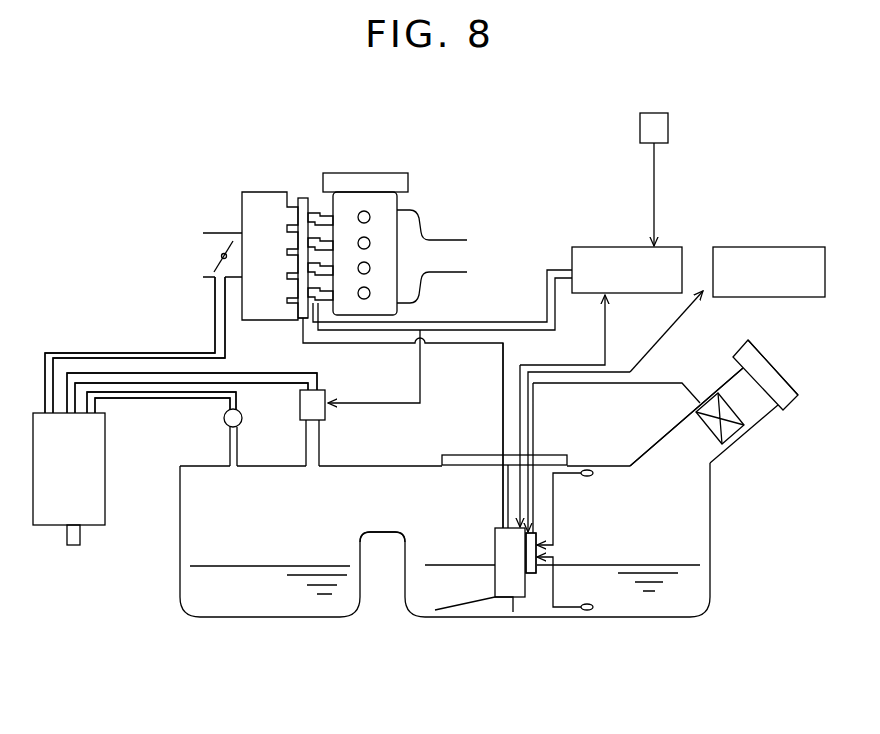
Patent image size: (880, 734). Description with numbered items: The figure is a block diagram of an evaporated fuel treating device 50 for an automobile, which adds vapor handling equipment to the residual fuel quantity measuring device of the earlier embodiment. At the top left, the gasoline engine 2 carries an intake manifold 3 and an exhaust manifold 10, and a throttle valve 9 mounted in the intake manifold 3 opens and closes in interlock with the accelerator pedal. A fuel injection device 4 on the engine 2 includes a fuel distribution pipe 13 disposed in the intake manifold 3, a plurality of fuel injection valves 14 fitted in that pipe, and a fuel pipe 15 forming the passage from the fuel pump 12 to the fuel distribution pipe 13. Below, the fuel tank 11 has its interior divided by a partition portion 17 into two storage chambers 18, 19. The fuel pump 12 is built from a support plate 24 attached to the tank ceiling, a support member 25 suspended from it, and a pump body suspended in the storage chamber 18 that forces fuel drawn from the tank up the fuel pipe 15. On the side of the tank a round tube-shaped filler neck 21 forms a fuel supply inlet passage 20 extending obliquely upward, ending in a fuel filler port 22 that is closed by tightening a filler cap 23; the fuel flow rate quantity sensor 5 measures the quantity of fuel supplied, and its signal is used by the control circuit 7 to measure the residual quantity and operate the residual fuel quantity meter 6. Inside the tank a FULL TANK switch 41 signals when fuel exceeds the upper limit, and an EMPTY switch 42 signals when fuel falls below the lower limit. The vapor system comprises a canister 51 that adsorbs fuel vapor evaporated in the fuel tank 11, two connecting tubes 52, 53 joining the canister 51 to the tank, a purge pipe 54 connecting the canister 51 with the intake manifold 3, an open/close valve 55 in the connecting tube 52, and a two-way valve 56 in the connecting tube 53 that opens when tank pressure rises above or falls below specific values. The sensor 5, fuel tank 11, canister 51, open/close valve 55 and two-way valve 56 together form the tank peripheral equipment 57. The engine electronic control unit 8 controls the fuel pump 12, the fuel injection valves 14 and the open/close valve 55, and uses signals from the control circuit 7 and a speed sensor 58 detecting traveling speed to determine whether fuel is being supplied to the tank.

The evaporated fuel treating device 50 is at (178, 158).
The gasoline engine 2 is at (376, 184).
The intake manifold 3 is at (254, 191).
The fuel injection device 4 is at (301, 188).
The fuel flow rate quantity sensor 5 is at (742, 430).
The residual fuel quantity meter 6 is at (810, 248).
The control circuit 7 is at (531, 573).
The engine electronic control unit 8 is at (581, 248).
The throttle valve 9 is at (224, 246).
The exhaust manifold 10 is at (458, 240).
The fuel tank 11 is at (180, 470).
The fuel pump 12 is at (508, 580).
The fuel distribution pipe 13 is at (300, 319).
The fuel injection valves 14 is at (316, 213).
The fuel pipe 15 is at (372, 345).
The partition portion 17 is at (379, 535).
The storage chamber 18 is at (464, 517).
The storage chamber 19 is at (270, 517).
The fuel supply inlet passage 20 is at (700, 447).
The filler neck 21 is at (722, 382).
The fuel filler port 22 is at (745, 380).
The filler cap 23 is at (784, 393).
The support plate 24 is at (455, 455).
The support member 25 is at (506, 487).
The FULL TANK switch 41 is at (587, 470).
The EMPTY switch 42 is at (588, 611).
The canister 51 is at (90, 490).
The connecting tube 52 is at (320, 452).
The connecting tube 53 is at (238, 452).
The purge pipe 54 is at (152, 352).
The open/close valve 55 is at (300, 407).
The two-way valve 56 is at (224, 418).
The peripheral equipment 57 is at (83, 348).
The speed sensor 58 is at (668, 128).